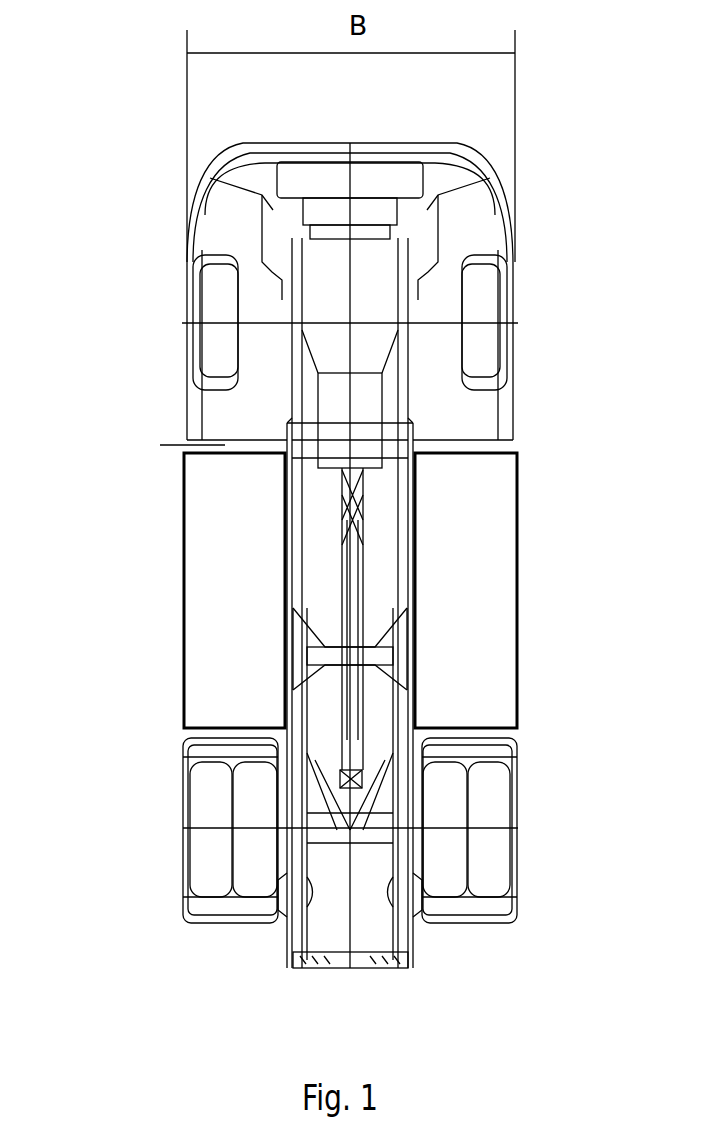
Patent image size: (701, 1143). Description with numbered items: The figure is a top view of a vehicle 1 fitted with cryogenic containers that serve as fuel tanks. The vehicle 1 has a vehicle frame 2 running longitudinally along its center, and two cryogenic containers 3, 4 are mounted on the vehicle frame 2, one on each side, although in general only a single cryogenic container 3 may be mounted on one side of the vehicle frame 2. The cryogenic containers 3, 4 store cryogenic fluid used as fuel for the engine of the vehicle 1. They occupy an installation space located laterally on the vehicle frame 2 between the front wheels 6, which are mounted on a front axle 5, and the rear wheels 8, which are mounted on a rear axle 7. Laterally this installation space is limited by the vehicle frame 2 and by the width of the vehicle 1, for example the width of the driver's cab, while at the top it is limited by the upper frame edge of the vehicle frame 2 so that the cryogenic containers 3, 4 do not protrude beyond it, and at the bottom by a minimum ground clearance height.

The vehicle 1 is at (118, 123).
The vehicle frame 2 is at (283, 700).
The cryogenic container 3 is at (183, 552).
The cryogenic container 4 is at (518, 568).
The front axle 5 is at (447, 325).
The front wheels 6 is at (490, 280).
The rear axle 7 is at (473, 833).
The rear wheels 8 is at (495, 878).